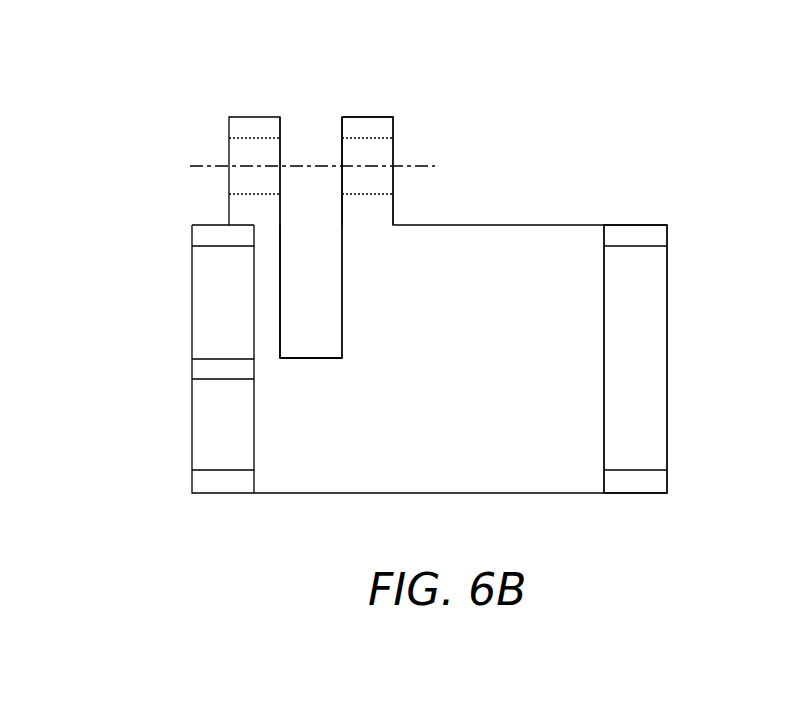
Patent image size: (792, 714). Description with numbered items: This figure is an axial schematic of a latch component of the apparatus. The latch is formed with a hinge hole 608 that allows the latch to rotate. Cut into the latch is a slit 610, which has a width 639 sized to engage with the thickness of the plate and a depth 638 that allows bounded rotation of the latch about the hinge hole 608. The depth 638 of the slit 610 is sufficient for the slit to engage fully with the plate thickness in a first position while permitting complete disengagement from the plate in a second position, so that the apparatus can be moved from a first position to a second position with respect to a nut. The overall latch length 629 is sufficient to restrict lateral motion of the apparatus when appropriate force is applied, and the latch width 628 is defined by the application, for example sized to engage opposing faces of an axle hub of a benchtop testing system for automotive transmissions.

The slit 610 is at (320, 122).
The hinge hole 608 is at (407, 146).
The depth 638 is at (280, 290).
The width 639 is at (308, 358).
The latch length 629 is at (667, 311).
The latch width 628 is at (583, 493).